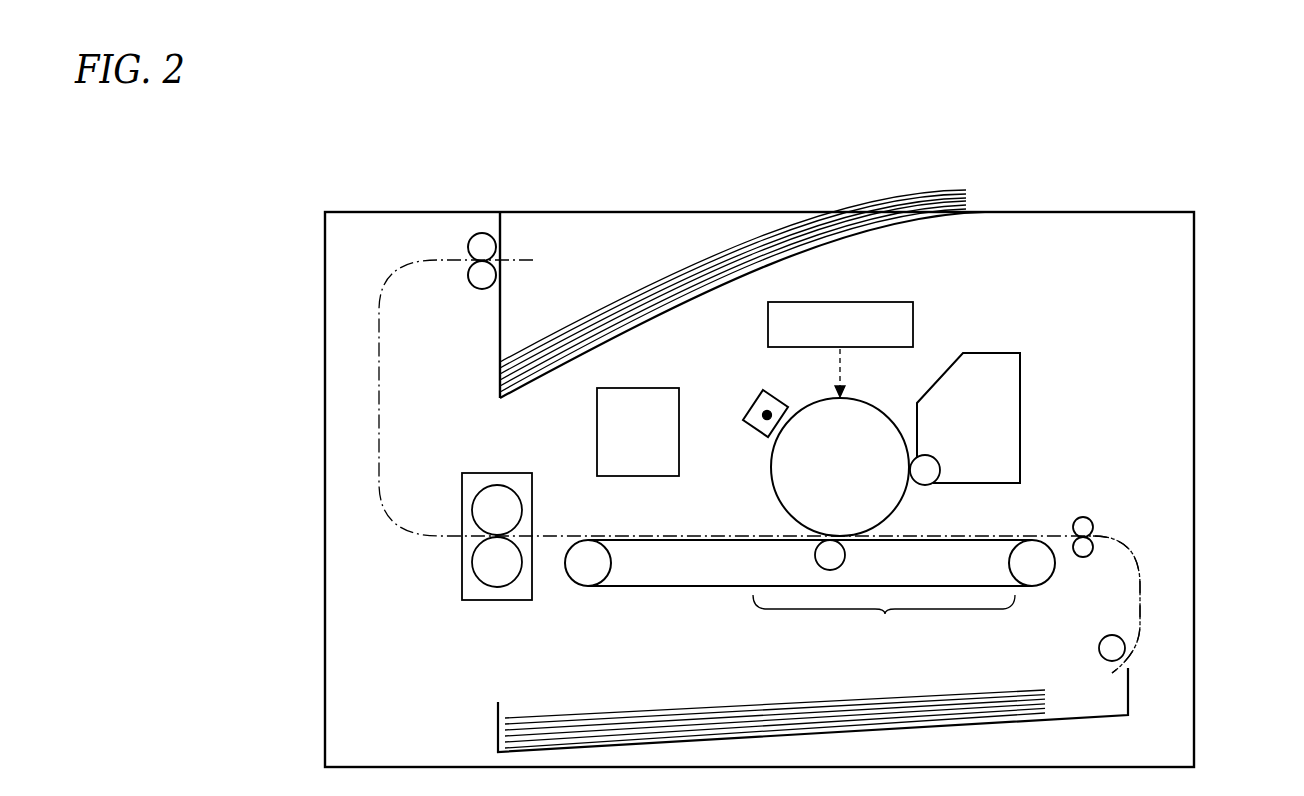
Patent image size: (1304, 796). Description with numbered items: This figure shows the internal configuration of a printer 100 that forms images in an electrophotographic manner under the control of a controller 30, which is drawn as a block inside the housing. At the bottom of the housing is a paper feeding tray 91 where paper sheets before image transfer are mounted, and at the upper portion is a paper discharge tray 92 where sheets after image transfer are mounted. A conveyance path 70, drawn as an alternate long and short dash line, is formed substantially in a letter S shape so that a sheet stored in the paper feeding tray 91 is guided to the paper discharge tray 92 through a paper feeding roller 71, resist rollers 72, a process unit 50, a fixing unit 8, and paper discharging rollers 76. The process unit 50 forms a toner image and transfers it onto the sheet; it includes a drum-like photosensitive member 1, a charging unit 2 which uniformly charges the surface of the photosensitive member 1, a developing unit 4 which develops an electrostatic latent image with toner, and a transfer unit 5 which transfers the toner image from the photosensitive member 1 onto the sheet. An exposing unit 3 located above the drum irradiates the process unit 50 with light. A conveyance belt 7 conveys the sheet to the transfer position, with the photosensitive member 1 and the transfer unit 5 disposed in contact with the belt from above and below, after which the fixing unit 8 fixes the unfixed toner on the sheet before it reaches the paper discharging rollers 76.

The printer 100 is at (1076, 179).
The paper discharge tray 92 is at (663, 312).
The paper discharging rollers 76 is at (468, 246).
The exposing unit 3 is at (848, 337).
The charging unit 2 is at (752, 405).
The photosensitive member 1 is at (848, 482).
The developing unit 4 is at (983, 436).
The controller 30 is at (654, 451).
The fixing unit 8 is at (477, 473).
The conveyance belt 7 is at (651, 588).
The transfer unit 5 is at (845, 558).
The process unit 50 is at (884, 622).
The resist rollers 72 is at (1090, 517).
The conveyance path 70 is at (1139, 584).
The paper feeding roller 71 is at (1099, 642).
The paper feeding tray 91 is at (828, 730).